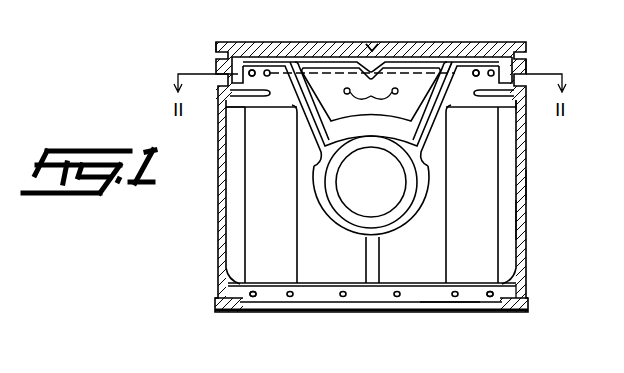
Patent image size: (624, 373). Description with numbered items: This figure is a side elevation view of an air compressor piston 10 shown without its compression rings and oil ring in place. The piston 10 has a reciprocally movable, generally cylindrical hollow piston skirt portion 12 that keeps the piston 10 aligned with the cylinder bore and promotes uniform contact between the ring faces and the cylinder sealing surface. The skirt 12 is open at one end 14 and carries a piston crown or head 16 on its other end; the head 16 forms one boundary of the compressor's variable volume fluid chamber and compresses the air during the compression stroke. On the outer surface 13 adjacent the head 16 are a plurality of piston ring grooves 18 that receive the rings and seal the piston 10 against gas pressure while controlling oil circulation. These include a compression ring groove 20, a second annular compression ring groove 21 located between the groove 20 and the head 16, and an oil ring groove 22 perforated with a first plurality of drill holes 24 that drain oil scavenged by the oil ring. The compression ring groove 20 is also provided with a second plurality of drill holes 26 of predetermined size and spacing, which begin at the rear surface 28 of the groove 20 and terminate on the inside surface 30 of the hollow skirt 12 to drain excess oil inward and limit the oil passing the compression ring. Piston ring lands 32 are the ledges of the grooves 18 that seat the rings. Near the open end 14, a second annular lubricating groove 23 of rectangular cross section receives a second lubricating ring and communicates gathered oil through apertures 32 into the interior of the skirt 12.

The air compressor piston 10 is at (438, 37).
The piston skirt portion 12 is at (527, 219).
The outer surface 13 is at (527, 187).
The open end 14 is at (448, 310).
The piston crown or head 16 is at (401, 42).
The piston ring grooves 18 is at (212, 100).
The compression ring groove 20 is at (526, 78).
The second annular compression ring groove 21 is at (232, 50).
The oil ring groove 22 is at (510, 100).
The second annular lubricating groove 23 is at (528, 295).
The first plurality of drill holes 24 is at (266, 98).
The second plurality of drill holes 26 is at (267, 70).
The rear surface of the compression ring groove 28 is at (237, 112).
The inside surface of the hollow piston skirt 30 is at (478, 58).
The piston ring lands 32 is at (524, 62).